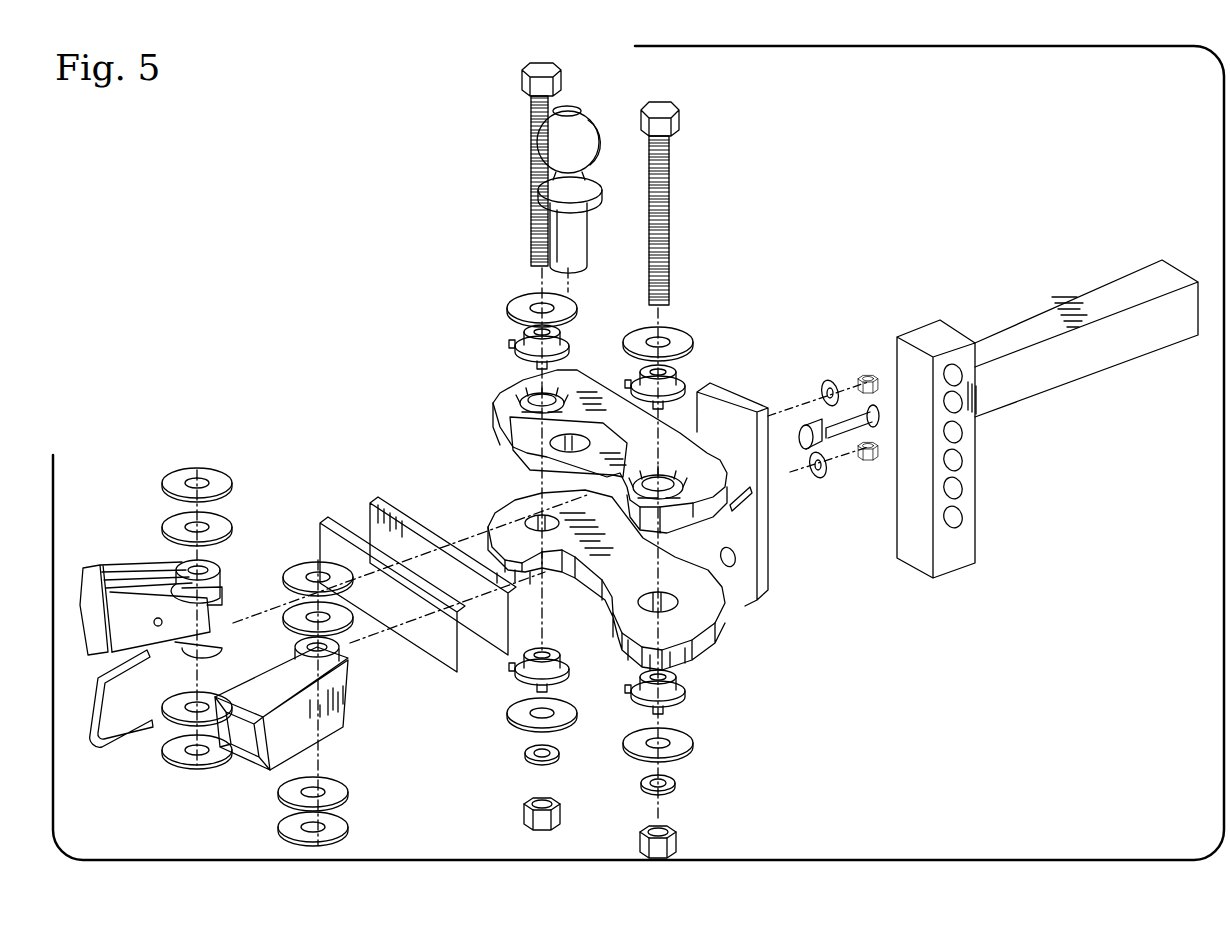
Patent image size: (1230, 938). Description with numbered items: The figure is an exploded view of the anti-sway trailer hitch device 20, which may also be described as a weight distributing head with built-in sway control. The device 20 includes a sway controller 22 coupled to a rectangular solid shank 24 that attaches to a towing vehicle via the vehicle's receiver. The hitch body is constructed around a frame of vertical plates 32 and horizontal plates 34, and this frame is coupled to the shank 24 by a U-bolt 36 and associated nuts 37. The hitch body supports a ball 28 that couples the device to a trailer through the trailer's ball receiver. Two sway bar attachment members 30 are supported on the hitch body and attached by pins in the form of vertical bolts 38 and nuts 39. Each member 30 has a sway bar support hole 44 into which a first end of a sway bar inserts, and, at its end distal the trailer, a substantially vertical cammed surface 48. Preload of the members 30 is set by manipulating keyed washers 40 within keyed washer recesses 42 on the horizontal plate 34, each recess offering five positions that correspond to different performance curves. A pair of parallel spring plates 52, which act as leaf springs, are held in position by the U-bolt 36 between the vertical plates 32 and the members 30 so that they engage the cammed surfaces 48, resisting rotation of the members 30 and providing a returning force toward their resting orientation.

The anti-sway trailer hitch device 20 is at (235, 210).
The sway controller 22 is at (757, 652).
The shank 24 is at (1078, 300).
The ball 28 is at (578, 120).
The sway bar attachment member 30 is at (97, 566).
The vertical plate 32 is at (770, 572).
The horizontal plate 34 is at (697, 648).
The U-bolt 36 is at (122, 752).
The nuts 37 is at (865, 370).
The vertical bolt 38 is at (522, 78).
The nuts 39 is at (562, 805).
The keyed washer 40 is at (512, 340).
The keyed washer recess 42 is at (528, 395).
The sway bar support hole 44 is at (82, 637).
The cammed surface 48 is at (222, 605).
The spring plate 52 is at (411, 583).